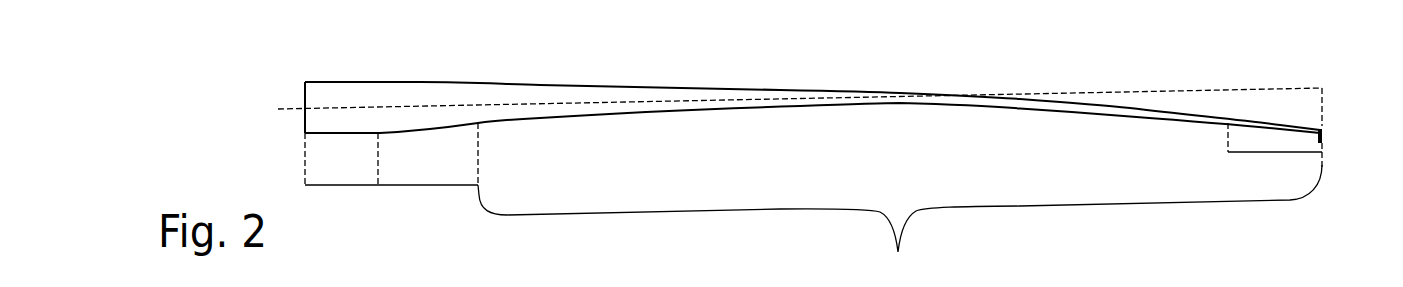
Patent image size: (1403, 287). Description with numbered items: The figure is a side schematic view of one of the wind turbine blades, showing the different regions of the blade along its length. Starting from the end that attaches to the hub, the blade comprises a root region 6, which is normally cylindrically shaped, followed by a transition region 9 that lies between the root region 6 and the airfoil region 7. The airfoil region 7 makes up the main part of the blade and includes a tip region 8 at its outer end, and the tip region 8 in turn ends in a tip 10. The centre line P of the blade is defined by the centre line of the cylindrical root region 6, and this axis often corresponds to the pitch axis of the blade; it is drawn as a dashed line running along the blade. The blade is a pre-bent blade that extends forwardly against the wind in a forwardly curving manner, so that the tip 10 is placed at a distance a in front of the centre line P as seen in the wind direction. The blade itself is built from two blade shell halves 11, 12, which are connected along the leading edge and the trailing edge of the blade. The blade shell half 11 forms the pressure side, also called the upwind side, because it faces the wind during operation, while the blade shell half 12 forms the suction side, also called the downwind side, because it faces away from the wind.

The root region 6 is at (344, 185).
The airfoil region 7 is at (900, 222).
The tip region 8 is at (1277, 152).
The transition region 9 is at (430, 185).
The tip 10 is at (1322, 142).
The blade shell half 11 is at (492, 118).
The blade shell half 12 is at (442, 100).
The centre line p is at (1178, 88).
The distance a is at (1322, 110).